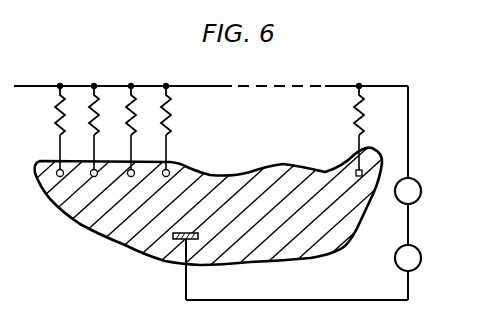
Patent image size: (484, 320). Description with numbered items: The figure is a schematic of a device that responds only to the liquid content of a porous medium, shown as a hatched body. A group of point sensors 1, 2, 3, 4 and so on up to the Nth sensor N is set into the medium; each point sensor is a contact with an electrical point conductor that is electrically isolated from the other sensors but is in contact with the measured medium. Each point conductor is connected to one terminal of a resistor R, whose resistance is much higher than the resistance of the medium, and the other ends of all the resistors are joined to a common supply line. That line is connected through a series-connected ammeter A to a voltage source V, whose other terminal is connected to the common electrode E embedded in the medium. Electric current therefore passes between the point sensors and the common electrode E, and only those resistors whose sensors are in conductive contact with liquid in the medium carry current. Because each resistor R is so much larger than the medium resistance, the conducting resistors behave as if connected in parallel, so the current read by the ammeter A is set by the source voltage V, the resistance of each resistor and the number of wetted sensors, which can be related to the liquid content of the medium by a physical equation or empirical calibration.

The point sensor 1 is at (46, 122).
The point sensor 2 is at (94, 122).
The point sensor 3 is at (131, 122).
The point sensor 4 is at (166, 122).
The Nth point sensor N is at (358, 120).
The resistor R is at (46, 110).
The common electrode E is at (185, 258).
The voltage source V is at (408, 191).
The ammeter A is at (408, 258).